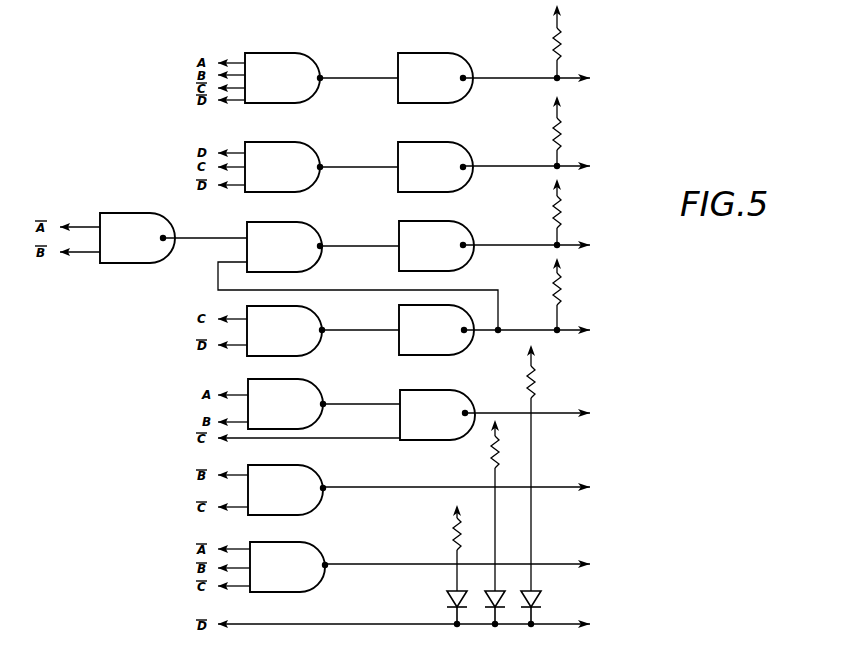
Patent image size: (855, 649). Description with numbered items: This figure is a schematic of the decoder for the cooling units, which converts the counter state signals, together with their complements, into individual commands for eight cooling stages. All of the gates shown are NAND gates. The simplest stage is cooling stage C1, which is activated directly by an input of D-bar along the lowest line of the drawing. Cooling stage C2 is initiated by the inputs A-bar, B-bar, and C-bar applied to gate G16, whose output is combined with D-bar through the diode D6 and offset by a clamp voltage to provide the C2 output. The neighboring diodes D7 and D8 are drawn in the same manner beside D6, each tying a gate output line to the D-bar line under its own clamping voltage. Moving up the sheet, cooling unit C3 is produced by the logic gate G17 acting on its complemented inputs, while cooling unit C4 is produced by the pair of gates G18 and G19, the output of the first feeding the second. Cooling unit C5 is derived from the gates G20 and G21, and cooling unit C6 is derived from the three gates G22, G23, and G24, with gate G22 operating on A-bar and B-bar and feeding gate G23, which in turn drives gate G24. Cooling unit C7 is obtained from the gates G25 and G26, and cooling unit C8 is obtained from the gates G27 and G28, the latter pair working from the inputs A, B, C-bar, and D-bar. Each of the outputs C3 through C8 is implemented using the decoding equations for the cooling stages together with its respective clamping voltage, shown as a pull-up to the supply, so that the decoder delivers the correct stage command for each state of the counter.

The NAND gate G16 is at (289, 567).
The NAND gate G17 is at (287, 490).
The NAND gate G18 is at (324, 404).
The NAND gate G19 is at (437, 415).
The NAND gate G20 is at (323, 331).
The NAND gate G21 is at (450, 330).
The NAND gate G22 is at (173, 238).
The NAND gate G23 is at (323, 247).
The NAND gate G24 is at (436, 246).
The NAND gate G25 is at (321, 167).
The NAND gate G26 is at (435, 167).
The NAND gate G27 is at (321, 78).
The NAND gate G28 is at (435, 78).
The diode D6 is at (455, 566).
The diode D7 is at (495, 523).
The diode D8 is at (532, 486).
The cooling stage C1 is at (420, 623).
The cooling stage C2 is at (473, 563).
The cooling unit C3 is at (472, 486).
The cooling unit C4 is at (543, 412).
The cooling unit C5 is at (543, 299).
The cooling unit C6 is at (542, 217).
The cooling unit C7 is at (543, 136).
The cooling unit C8 is at (542, 46).